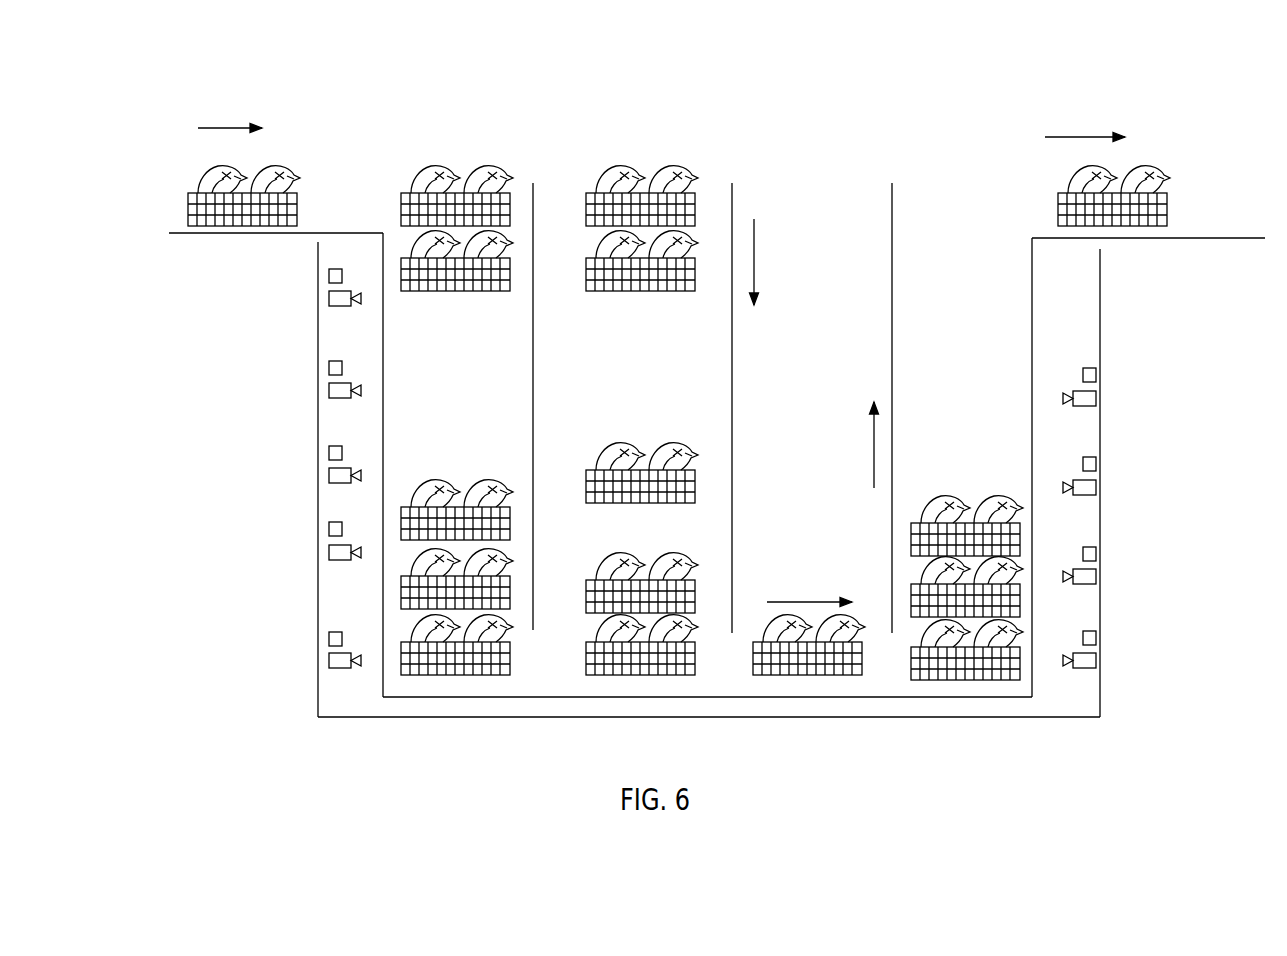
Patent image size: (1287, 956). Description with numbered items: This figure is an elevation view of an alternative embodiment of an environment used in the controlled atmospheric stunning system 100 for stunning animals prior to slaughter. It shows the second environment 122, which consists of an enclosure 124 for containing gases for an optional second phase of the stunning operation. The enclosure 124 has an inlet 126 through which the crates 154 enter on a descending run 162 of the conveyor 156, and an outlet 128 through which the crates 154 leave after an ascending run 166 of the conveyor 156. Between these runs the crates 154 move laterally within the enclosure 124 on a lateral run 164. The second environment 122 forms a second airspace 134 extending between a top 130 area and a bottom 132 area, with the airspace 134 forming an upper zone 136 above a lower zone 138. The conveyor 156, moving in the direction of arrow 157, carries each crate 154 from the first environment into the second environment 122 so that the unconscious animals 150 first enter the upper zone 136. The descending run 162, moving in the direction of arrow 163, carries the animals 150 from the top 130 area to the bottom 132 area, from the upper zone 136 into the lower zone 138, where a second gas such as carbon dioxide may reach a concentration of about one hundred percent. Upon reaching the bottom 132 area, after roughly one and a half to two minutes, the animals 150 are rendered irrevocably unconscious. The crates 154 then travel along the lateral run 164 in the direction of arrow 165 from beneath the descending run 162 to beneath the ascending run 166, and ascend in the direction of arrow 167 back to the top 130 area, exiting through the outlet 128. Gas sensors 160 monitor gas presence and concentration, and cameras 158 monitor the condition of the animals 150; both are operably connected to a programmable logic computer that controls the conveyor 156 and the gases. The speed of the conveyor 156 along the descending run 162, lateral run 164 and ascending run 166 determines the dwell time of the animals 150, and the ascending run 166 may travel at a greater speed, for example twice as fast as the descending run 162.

The controlled atmospheric stunning system 100 is at (640, 116).
The second environment 122 is at (762, 157).
The enclosure 124 is at (318, 483).
The inlet 126 is at (385, 150).
The outlet 128 is at (1021, 185).
The top area 130 is at (297, 376).
The bottom area 132 is at (303, 643).
The second airspace 134 is at (827, 168).
The upper zone 136 is at (712, 343).
The lower zone 138 is at (360, 590).
The animals 150 is at (214, 170).
The crates 154 is at (300, 203).
The conveyor 156 is at (200, 238).
The arrow 157 is at (230, 128).
The cameras 158 is at (329, 300).
The sensors 160 is at (329, 277).
The descending run 162 is at (536, 150).
The arrow 163 is at (754, 258).
The lateral run 164 is at (670, 697).
The arrow 165 is at (800, 602).
The ascending run 166 is at (952, 200).
The arrow 167 is at (874, 462).